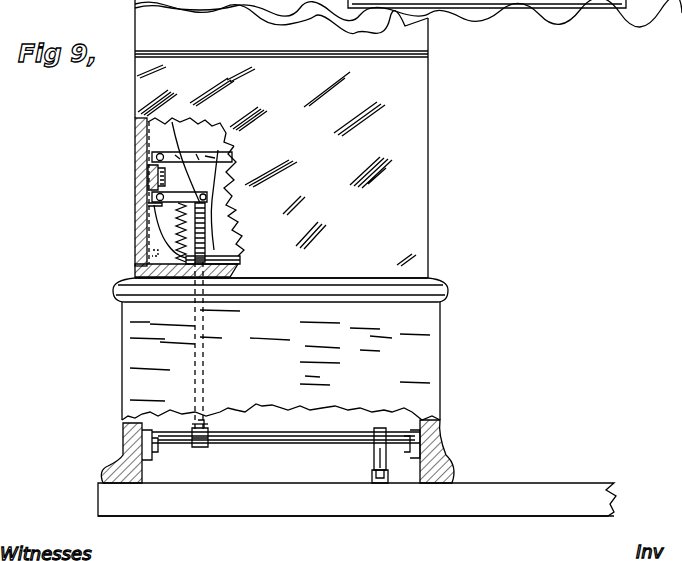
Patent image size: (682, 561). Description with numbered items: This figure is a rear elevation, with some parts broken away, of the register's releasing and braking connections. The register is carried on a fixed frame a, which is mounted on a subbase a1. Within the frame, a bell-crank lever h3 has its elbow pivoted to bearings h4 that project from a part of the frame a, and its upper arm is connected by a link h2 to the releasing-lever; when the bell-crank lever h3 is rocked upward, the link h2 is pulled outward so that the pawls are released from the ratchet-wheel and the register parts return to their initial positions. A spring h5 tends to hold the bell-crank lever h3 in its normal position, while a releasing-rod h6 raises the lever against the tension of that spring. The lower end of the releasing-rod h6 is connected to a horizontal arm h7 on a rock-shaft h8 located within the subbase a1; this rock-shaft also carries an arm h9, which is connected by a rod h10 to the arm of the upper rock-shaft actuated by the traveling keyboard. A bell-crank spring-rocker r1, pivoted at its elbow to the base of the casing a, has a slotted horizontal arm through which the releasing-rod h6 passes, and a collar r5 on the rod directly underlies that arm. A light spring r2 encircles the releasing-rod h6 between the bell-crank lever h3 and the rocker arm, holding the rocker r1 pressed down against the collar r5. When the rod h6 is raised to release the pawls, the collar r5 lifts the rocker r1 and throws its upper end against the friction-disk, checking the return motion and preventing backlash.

The fixed frame a is at (418, 175).
The subbase a1 is at (428, 387).
The link h2 is at (223, 162).
The bell-crank lever h3 is at (146, 178).
The bearings h4 is at (146, 204).
The spring h5 is at (198, 206).
The releasing-rod h6 is at (238, 256).
The horizontal arm h7 is at (202, 441).
The rock-shaft h8 is at (292, 444).
The arm h9 is at (374, 462).
The rod h10 is at (381, 484).
The bell-crank spring-rocker r1 is at (230, 209).
The light spring r2 is at (203, 223).
The collar r5 is at (194, 277).